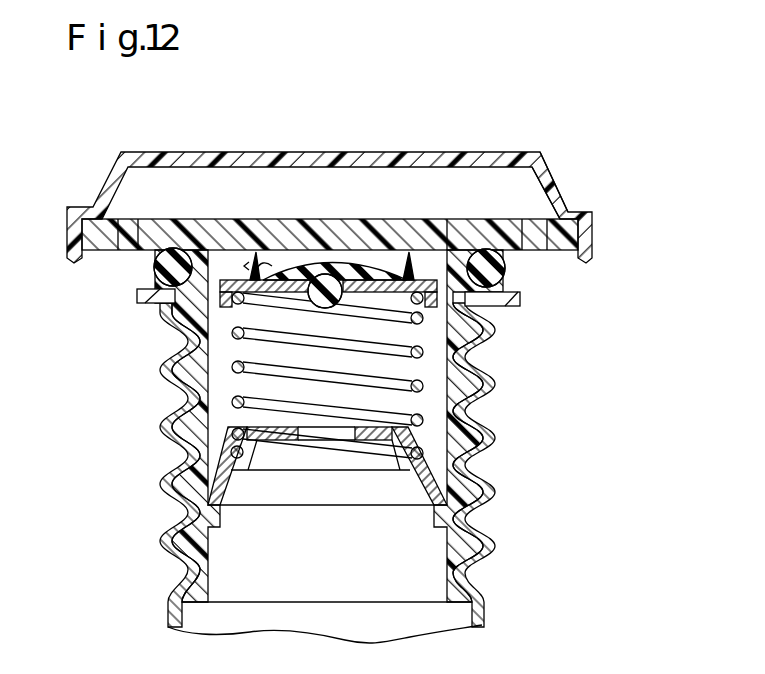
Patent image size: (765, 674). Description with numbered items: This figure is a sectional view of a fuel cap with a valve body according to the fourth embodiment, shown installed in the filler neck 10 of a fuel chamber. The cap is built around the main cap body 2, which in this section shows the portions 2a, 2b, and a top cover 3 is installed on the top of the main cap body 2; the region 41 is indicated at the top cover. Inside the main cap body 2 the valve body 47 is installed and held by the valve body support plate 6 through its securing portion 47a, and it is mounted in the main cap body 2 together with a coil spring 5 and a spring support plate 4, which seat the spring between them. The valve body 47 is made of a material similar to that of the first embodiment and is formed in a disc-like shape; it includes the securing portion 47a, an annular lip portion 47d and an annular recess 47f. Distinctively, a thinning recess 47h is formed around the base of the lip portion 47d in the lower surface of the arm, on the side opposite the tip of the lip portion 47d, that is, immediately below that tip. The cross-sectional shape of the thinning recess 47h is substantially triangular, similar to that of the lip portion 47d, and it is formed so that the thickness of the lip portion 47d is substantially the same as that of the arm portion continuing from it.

The main cap body 2 is at (473, 403).
The body flange outer portion 2a is at (407, 233).
The body flange inner portion 2b is at (340, 232).
The top cover 3 is at (178, 162).
The spring support plate 4 is at (437, 478).
The coil spring 5 is at (420, 353).
The valve body support plate 6 is at (228, 284).
The filler neck 10 is at (160, 435).
The cap 41 is at (518, 153).
The valve body 47 is at (318, 255).
The securing portion 47a is at (295, 265).
The lip portion 47d is at (238, 262).
The annular recess 47f is at (262, 263).
The thinning recess 47h is at (408, 262).